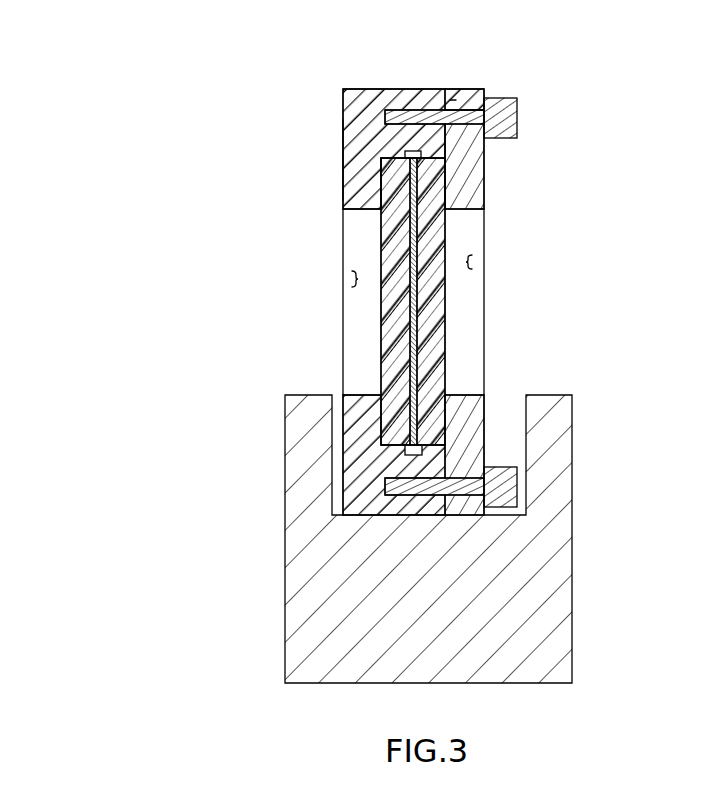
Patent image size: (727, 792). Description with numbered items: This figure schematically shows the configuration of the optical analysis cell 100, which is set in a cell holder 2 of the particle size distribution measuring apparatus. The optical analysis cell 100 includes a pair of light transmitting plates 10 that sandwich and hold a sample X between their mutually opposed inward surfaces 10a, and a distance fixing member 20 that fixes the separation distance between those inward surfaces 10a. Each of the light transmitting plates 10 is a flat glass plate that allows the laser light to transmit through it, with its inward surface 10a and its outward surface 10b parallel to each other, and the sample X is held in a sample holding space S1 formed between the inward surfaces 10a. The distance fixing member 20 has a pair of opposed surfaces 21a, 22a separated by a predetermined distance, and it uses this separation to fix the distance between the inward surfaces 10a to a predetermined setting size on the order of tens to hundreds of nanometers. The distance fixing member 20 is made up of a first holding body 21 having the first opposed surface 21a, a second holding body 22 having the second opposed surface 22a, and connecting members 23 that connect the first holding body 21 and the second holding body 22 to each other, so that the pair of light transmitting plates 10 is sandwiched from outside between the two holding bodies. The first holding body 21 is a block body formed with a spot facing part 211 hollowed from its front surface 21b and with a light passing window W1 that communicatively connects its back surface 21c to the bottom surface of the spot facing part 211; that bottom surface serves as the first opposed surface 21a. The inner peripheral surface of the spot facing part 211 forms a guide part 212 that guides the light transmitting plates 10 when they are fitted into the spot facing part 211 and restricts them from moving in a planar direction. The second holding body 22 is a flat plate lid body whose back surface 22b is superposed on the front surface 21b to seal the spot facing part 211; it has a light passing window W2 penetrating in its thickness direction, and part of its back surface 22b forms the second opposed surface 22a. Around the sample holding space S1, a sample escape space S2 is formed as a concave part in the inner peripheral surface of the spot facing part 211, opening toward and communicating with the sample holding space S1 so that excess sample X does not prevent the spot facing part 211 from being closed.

The optical analysis cell 100 is at (164, 60).
The cell holder 2 is at (285, 490).
The distance fixing member 20 is at (279, 139).
The first holding body 21 is at (342, 428).
The first opposed surface 21a is at (380, 175).
The front surface 21b is at (468, 89).
The back surface 21c is at (342, 118).
The spot facing part 211 is at (388, 152).
The guide part 212 is at (375, 437).
The second holding body 22 is at (485, 432).
The second opposed surface 22a is at (443, 177).
The back surface 22b is at (440, 148).
The connecting members 23 is at (518, 119).
The light transmitting plates 10 is at (380, 248).
The inward surfaces 10a is at (447, 318).
The outward surfaces 10b is at (447, 300).
The sample X is at (417, 372).
The sample holding space S1 is at (430, 440).
The sample escape space S2 is at (417, 150).
The light passing window W1 is at (350, 280).
The light passing window W2 is at (474, 262).